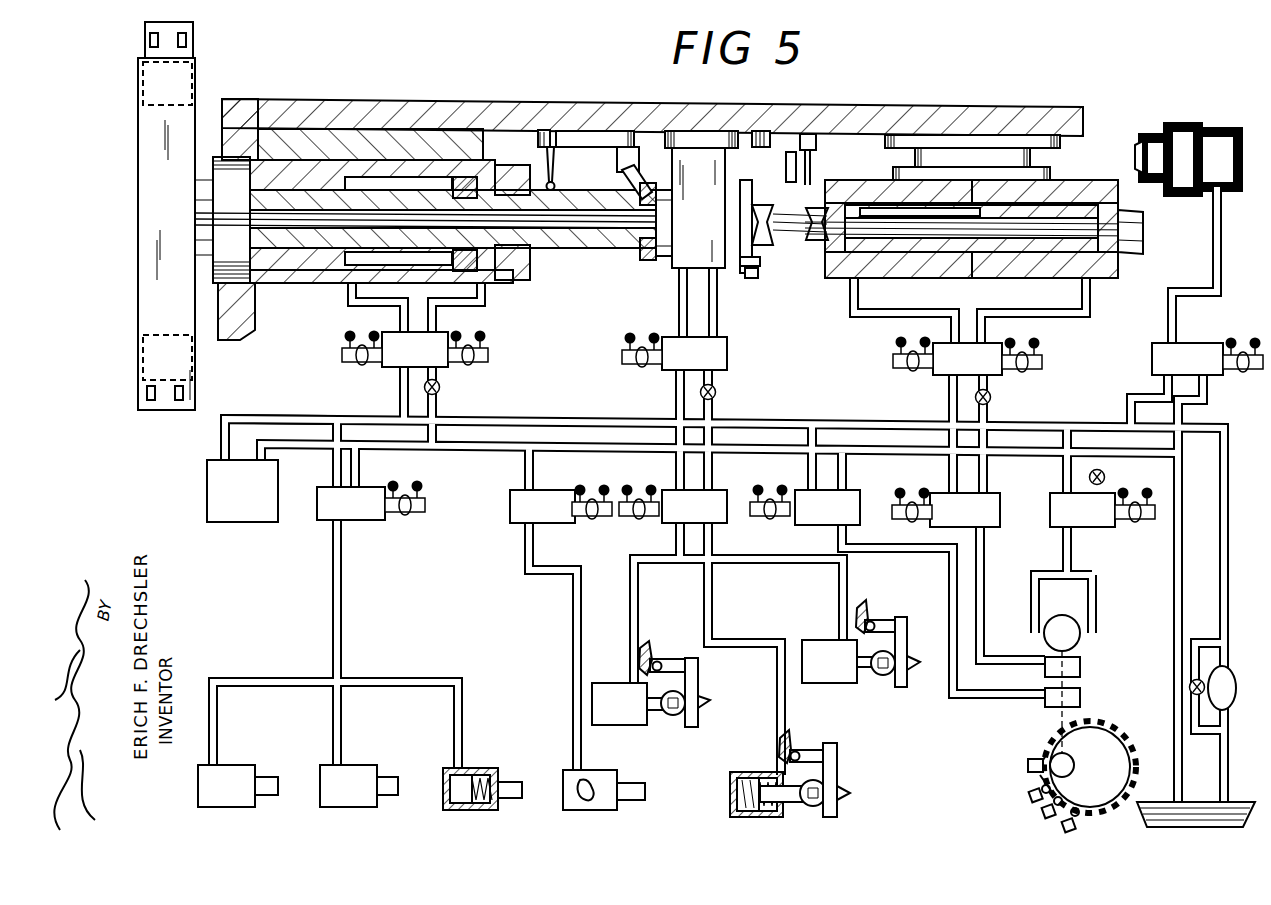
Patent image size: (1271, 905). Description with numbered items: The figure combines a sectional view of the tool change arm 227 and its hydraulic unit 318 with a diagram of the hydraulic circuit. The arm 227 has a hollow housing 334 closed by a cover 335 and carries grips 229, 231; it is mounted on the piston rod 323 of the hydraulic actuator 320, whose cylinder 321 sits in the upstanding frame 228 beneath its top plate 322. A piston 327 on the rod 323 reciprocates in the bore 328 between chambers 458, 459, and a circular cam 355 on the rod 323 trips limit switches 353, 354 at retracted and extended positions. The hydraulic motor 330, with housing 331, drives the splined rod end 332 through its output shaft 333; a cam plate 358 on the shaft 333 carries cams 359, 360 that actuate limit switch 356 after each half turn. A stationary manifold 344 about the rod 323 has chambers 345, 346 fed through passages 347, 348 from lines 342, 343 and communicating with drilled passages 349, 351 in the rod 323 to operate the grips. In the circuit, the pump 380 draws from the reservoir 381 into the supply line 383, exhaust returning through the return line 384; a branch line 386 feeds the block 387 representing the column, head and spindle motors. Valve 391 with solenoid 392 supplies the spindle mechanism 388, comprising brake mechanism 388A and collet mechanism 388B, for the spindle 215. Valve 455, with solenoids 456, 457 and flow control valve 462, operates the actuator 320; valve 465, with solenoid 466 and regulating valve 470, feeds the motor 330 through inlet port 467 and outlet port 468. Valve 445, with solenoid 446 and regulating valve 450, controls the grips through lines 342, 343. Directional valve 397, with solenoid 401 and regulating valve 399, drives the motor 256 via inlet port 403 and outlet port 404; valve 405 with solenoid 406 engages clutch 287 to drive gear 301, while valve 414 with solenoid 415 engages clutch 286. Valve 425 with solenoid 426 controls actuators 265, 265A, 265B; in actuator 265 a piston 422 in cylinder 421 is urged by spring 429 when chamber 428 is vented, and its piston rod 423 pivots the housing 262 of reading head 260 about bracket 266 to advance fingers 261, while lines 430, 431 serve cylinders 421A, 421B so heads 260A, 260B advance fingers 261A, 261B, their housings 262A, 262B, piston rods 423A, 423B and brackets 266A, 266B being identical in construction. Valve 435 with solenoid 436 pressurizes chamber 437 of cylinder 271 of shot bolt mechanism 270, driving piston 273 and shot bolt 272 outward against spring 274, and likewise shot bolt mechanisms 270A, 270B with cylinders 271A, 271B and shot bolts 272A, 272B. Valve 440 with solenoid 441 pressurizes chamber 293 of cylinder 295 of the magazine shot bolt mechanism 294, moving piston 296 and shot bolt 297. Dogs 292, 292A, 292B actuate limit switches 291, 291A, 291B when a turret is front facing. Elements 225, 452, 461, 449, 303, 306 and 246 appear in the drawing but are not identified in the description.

The grip 229 is at (190, 22).
The housing 225 is at (639, 212).
The top plate 322 is at (400, 101).
The hydraulic motor 330 is at (702, 128).
The hydraulic unit 318 is at (822, 96).
The spindle collet actuator mechanism 388B is at (1160, 140).
The spindle brake mechanism 388A is at (1190, 135).
The spindle 215 is at (1134, 156).
The hollow housing 334 is at (140, 136).
The enlarged bore 328 is at (395, 183).
The limit switch 354 is at (556, 160).
The limit switch 353 is at (620, 178).
The limit switch 356 is at (770, 156).
The cam 359 is at (766, 186).
The rearwardly extending end of piston rod 332 is at (772, 210).
The stationary manifold 344 is at (974, 220).
The manifold chamber 345 is at (898, 191).
The manifold chamber 346 is at (1045, 191).
The drilled passage 349 is at (975, 214).
The drilled passage 351 is at (1040, 240).
The spindle mechanism 388 is at (1198, 214).
The tool transfer arm 227 is at (120, 218).
The motor housing 331 is at (710, 237).
The piston rod 323 is at (290, 282).
The cylinder 321 is at (336, 286).
The upstanding frame 228 is at (240, 340).
The cover 335 is at (143, 378).
The grip 231 is at (136, 410).
The chamber 459 is at (385, 307).
The piston 327 is at (454, 307).
The chamber 458 is at (506, 268).
The circular cam 355 is at (640, 262).
The inlet port 467 is at (680, 278).
The solenoid actuated valve 465 is at (640, 340).
The solenoid 466 is at (658, 344).
The outlet port 468 is at (716, 280).
The cam plate 358 is at (754, 262).
The cam 360 is at (752, 274).
The output shaft 333 is at (748, 272).
The hydraulic actuator 320 is at (506, 292).
The line 342 is at (856, 302).
The manifold passage 347 is at (862, 280).
The manifold passage 348 is at (1082, 280).
The line 343 is at (1086, 302).
The valve 445 is at (973, 354).
The solenoid 452 is at (1040, 352).
The valve 391 is at (1188, 345).
The solenoid 392 is at (1246, 326).
The solenoid 456 is at (482, 338).
The solenoid 457 is at (352, 358).
The valve 455 is at (415, 364).
The conduit 461 is at (438, 380).
The flow control valve 462 is at (440, 389).
The regulating valve 470 is at (716, 392).
The solenoid 446 is at (898, 362).
The conduit 449 is at (990, 385).
The flow regulating valve 450 is at (991, 398).
The branch line 386 is at (240, 419).
The pressure supply line 383 is at (556, 420).
The main return line 384 is at (496, 452).
The block 387 is at (218, 500).
The solenoid 436 is at (416, 486).
The solenoid actuated valve 435 is at (390, 515).
The solenoid actuated valve 440 is at (541, 518).
The solenoid 441 is at (581, 488).
The solenoid 426 is at (632, 488).
The solenoid actuated valve 425 is at (660, 507).
The solenoid 406 is at (782, 488).
The solenoid control valve 405 is at (789, 505).
The solenoid 415 is at (924, 490).
The solenoid actuated valve 414 is at (958, 490).
The adjustable flow regulating valve 399 is at (1106, 477).
The solenoid 401 is at (1142, 522).
The directional control valve 397 is at (1109, 538).
The motor 256 is at (1056, 620).
The outlet port 404 is at (1086, 630).
The inlet port 403 is at (1032, 632).
The magazine clutch 286 is at (1082, 667).
The hydraulic clutch mechanism 287 is at (1082, 697).
The pump 380 is at (1224, 668).
The line 430 is at (638, 606).
The line 431 is at (836, 585).
The pawl 266B is at (866, 608).
The pawl 266A is at (650, 650).
The cylinder 421A is at (680, 689).
The lever 262A is at (700, 670).
The sensing fingers 261A is at (700, 704).
The reading head 260A is at (704, 726).
The actuator 265A is at (646, 740).
The cylinder 423A is at (619, 704).
The cylinder 421B is at (902, 672).
The cylinder 423B is at (829, 661).
The sensing fingers 261B is at (958, 662).
The actuator 265B is at (838, 698).
The lever 262B is at (902, 690).
The reading head 260B is at (900, 688).
The dog 292B is at (1098, 724).
The shaft 303 is at (1046, 754).
The gear 301 is at (1070, 760).
The stop 246 is at (1030, 760).
The dog 292 is at (1037, 778).
The dog 292A is at (1126, 775).
The ring gear 306 is at (1108, 787).
The limit switch 291 is at (1028, 795).
The limit switch 291A is at (1040, 812).
The limit switch 291B is at (1076, 826).
The reservoir 381 is at (1232, 824).
The cylinder 271B is at (222, 766).
The shot bolt 272B is at (264, 780).
The cylinder 271A is at (342, 768).
The shot bolt 272A is at (384, 782).
The cylinder 271 is at (448, 768).
The chamber 437 is at (466, 768).
The shot bolt mechanism 270 is at (478, 769).
The chamber 293 is at (572, 772).
The piston 296 is at (588, 780).
The shot bolt 297 is at (636, 786).
The actuator 265 is at (728, 770).
The piston 422 is at (764, 770).
The bracket 266 is at (790, 742).
The housing 262 is at (838, 760).
The fingers 261 is at (842, 790).
The shot bolt 272 is at (505, 782).
The piston 273 is at (452, 800).
The spring 274 is at (482, 806).
The spring 429 is at (735, 790).
The cylinder 421 is at (786, 784).
The chamber 428 is at (748, 812).
The piston rod 423 is at (782, 804).
The reading head 260 is at (818, 808).
The cylinder 295 is at (606, 774).
The shot bolt mechanism 294 is at (618, 814).
The shot bolt mechanism 270A is at (381, 785).
The shot bolt mechanism 270B is at (260, 784).